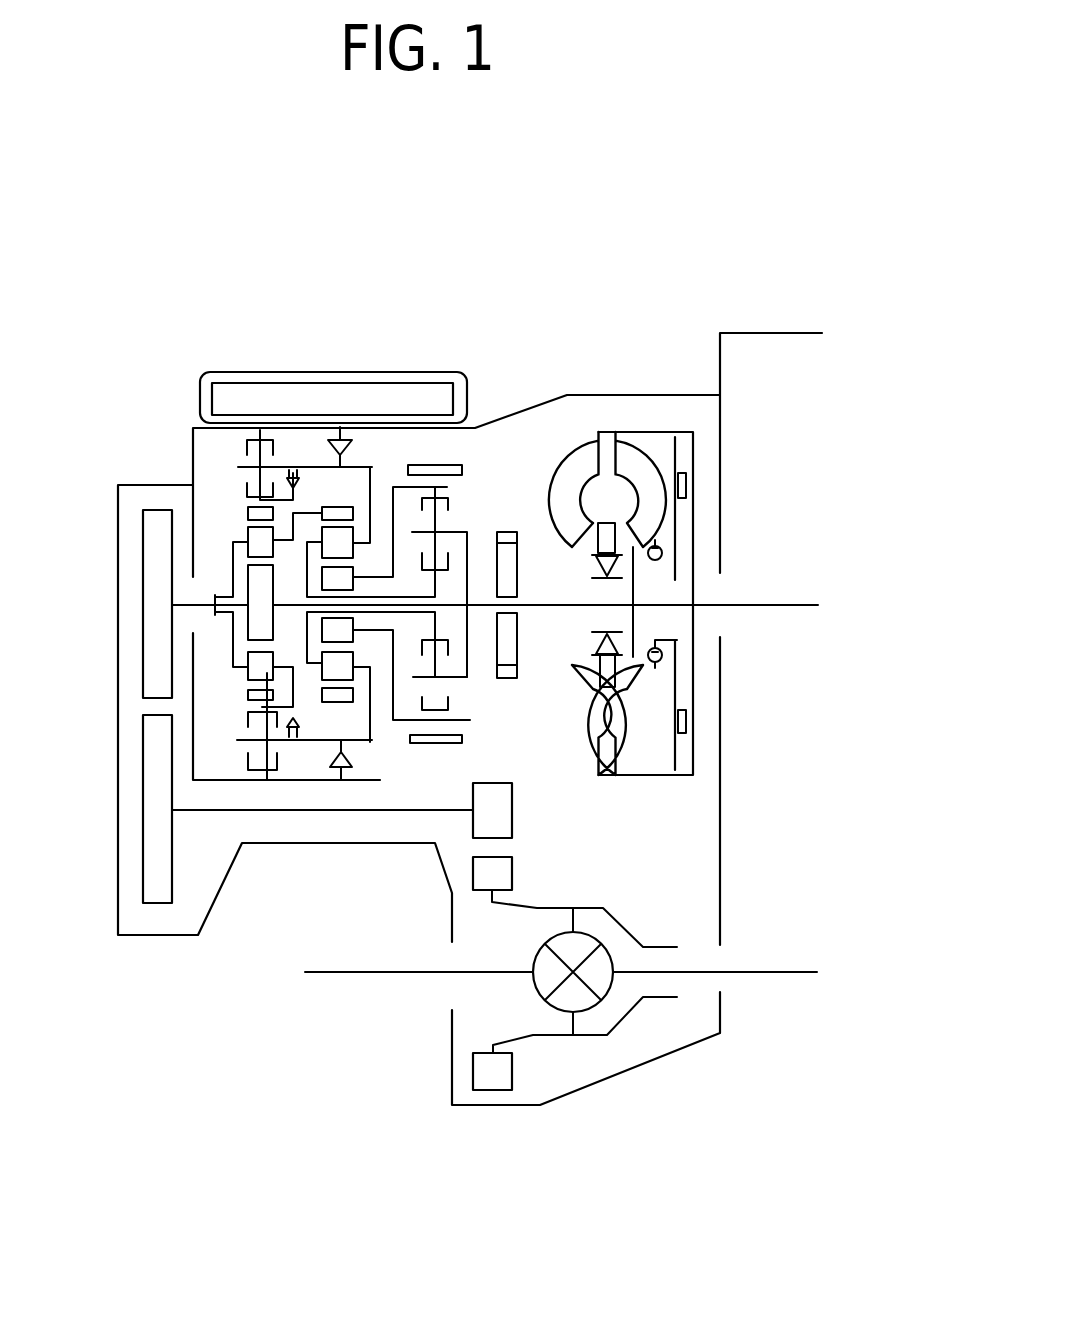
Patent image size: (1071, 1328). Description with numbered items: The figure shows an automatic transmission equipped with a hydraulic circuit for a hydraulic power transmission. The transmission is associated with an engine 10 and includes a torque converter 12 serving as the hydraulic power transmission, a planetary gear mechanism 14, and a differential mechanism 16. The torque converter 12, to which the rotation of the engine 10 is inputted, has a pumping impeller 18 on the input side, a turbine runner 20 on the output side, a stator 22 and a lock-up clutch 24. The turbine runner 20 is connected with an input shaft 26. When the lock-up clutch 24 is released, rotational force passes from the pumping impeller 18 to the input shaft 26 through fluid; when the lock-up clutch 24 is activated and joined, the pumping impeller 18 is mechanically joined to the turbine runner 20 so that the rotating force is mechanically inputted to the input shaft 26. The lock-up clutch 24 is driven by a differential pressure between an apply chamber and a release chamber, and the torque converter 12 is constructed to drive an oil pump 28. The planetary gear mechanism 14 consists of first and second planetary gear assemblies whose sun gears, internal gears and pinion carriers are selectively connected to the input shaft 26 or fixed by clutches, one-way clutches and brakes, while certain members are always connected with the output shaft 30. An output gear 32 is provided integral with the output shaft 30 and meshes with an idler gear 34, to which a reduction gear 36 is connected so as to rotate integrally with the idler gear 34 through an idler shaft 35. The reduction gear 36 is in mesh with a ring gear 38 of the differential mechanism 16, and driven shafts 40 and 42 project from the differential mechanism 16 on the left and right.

The engine 10 is at (763, 333).
The torque converter 12 is at (677, 538).
The planetary gear mechanism 14 is at (288, 445).
The differential mechanism 16 is at (592, 925).
The pumping impeller 18 is at (583, 460).
The turbine runner 20 is at (652, 460).
The stator 22 is at (655, 560).
The lock-up clutch 24 is at (695, 518).
The input shaft 26 is at (532, 605).
The oil pump 28 is at (507, 678).
The output shaft 30 is at (183, 603).
The output gear 32 is at (150, 598).
The idler gear 34 is at (150, 825).
The idler shaft 35 is at (438, 808).
The reduction gear 36 is at (512, 810).
The ring gear 38 is at (492, 1090).
The driven shaft 40 is at (342, 973).
The driven shaft 42 is at (784, 973).